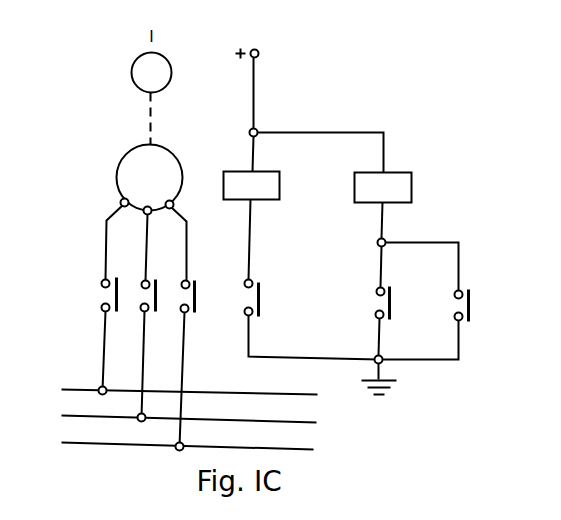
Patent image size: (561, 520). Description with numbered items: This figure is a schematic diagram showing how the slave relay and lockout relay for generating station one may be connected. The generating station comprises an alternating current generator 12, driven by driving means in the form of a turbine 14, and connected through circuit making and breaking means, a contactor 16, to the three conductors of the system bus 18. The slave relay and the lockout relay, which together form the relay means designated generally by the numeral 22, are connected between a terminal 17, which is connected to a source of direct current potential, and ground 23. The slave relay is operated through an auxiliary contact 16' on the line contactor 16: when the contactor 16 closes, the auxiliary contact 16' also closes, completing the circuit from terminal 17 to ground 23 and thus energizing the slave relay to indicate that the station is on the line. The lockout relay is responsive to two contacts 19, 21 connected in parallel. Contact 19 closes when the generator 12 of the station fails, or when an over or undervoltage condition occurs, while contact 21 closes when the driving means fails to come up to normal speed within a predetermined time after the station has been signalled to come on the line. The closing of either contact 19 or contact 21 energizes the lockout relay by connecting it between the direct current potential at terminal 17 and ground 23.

The alternating current generator 12 is at (115, 175).
The turbine 14 is at (170, 73).
The contactor 16 is at (148, 280).
The auxiliary contact 16' is at (266, 284).
The terminal 17 is at (258, 54).
The bus bars 18 is at (313, 398).
The contact 19 is at (374, 292).
The contact 21 is at (464, 288).
The slave relays and lockout relays 22 is at (299, 243).
The ground 23 is at (393, 388).